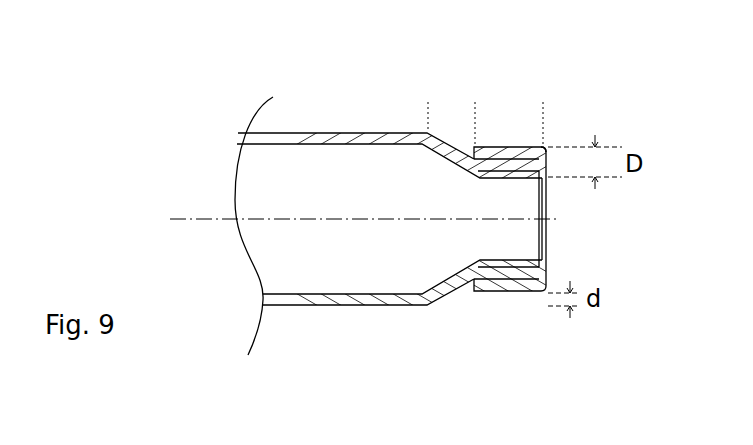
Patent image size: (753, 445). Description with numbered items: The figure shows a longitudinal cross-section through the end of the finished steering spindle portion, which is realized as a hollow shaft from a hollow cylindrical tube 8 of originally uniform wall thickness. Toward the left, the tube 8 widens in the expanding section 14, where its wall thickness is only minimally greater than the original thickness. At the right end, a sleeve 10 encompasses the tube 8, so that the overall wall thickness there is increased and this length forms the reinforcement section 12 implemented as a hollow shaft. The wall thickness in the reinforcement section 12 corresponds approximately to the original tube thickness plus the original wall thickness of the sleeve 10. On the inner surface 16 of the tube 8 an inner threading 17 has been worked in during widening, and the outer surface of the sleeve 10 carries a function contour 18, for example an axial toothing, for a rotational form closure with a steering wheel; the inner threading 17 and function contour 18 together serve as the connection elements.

The tube 8 is at (293, 130).
The sleeve 10 is at (527, 145).
The reinforcement section 12 is at (543, 100).
The expanding section 14 is at (475, 100).
The inner surface 16 is at (512, 173).
The inner threading 17 is at (523, 260).
The function contour 18 is at (540, 143).